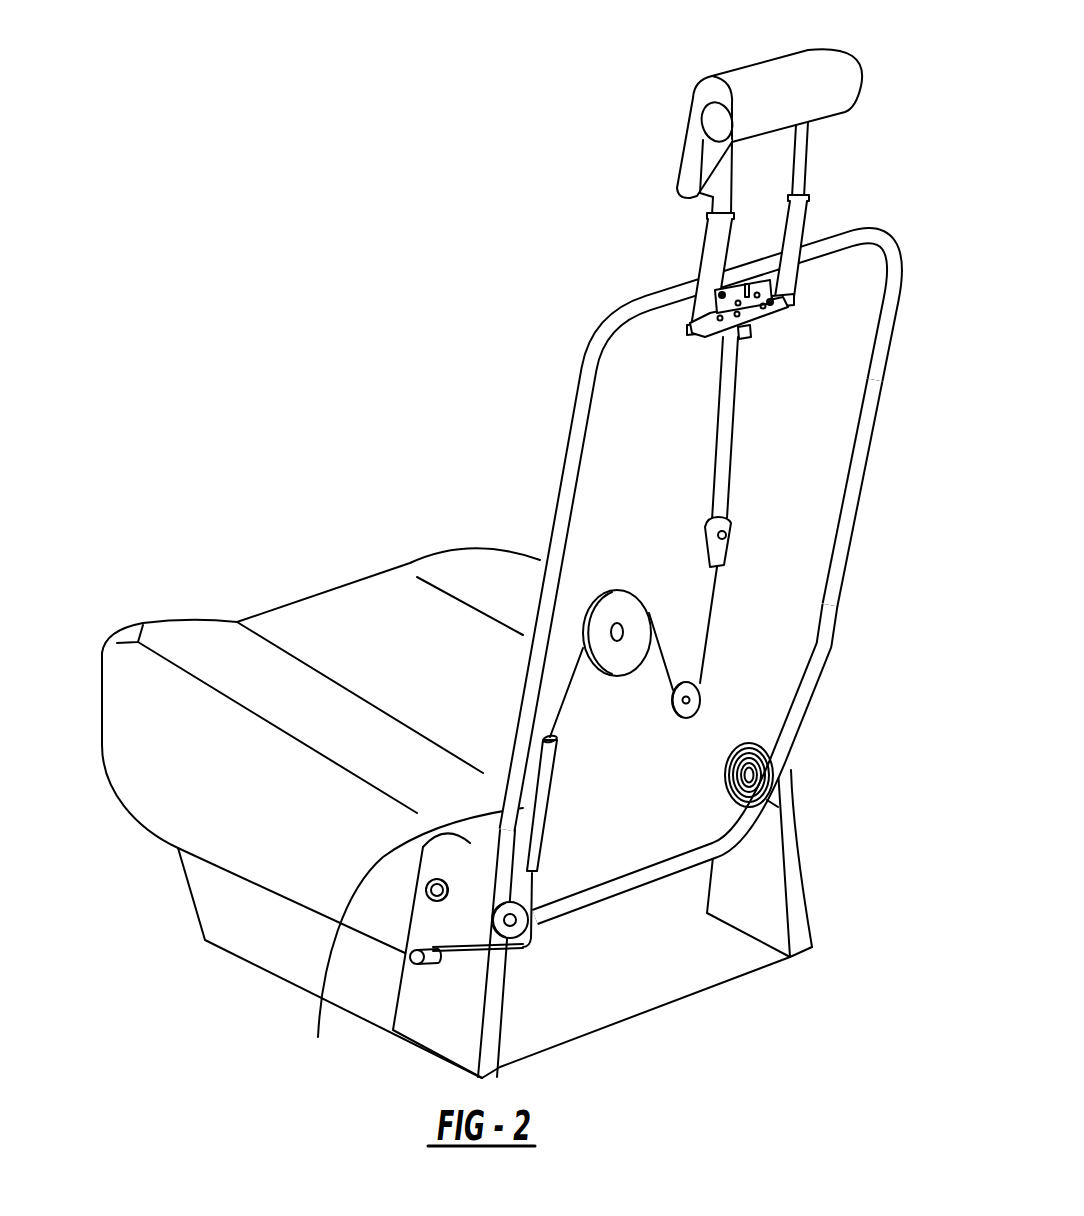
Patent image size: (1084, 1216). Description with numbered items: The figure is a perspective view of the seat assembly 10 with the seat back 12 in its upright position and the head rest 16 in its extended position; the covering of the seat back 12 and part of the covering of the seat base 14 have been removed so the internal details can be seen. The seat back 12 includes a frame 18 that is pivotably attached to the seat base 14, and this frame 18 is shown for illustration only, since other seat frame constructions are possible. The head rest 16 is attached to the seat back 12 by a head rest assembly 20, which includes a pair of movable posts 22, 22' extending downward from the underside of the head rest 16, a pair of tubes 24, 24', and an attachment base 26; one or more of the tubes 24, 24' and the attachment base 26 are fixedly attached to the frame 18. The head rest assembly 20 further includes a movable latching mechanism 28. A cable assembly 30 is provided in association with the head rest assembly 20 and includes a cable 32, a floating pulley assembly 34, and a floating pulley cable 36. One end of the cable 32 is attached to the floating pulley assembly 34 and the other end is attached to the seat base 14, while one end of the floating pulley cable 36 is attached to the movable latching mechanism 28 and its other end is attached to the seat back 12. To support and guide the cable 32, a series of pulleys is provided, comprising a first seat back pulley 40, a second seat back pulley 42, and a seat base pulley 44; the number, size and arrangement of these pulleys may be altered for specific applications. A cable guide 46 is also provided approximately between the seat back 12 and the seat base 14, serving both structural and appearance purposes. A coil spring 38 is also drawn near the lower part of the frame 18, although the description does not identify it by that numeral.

The seat assembly 10 is at (424, 483).
The seat back 12 is at (803, 573).
The seat base 14 is at (310, 613).
The head rest 16 is at (760, 78).
The frame 18 is at (867, 447).
The head rest assembly 20 is at (630, 127).
The movable post 22 is at (659, 186).
The movable post 22' is at (845, 135).
The tube 24 is at (647, 274).
The tube 24' is at (834, 238).
The attachment base 26 is at (712, 293).
The movable latching mechanism 28 is at (737, 330).
The cable assembly 30 is at (687, 489).
The cable 32 is at (710, 633).
The floating pulley assembly 34 is at (727, 540).
The floating pulley cable 36 is at (737, 403).
The spring 38 is at (753, 745).
The first seat back pulley 40 is at (683, 718).
The second seat back pulley 42 is at (613, 663).
The seat base pulley 44 is at (520, 943).
The cable guide 46 is at (415, 936).